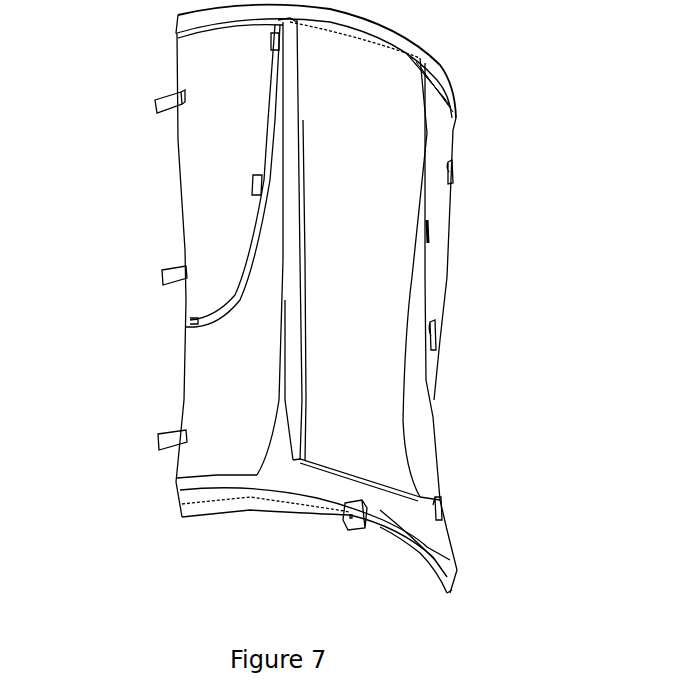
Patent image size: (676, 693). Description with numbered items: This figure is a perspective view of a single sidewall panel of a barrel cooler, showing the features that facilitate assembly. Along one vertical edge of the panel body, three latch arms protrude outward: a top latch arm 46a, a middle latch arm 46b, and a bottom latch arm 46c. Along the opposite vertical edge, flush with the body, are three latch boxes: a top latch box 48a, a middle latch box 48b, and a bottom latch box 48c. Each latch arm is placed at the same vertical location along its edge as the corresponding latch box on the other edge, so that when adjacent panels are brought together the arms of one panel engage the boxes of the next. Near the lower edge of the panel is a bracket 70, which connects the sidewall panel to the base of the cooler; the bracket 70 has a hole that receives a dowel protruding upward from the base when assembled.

The top latch arm 46a is at (157, 93).
The middle latch arm 46b is at (162, 280).
The bottom latch arm 46c is at (158, 442).
The top latch box 48a is at (453, 182).
The middle latch box 48b is at (436, 337).
The bottom latch box 48c is at (442, 500).
The bracket 70 is at (343, 523).